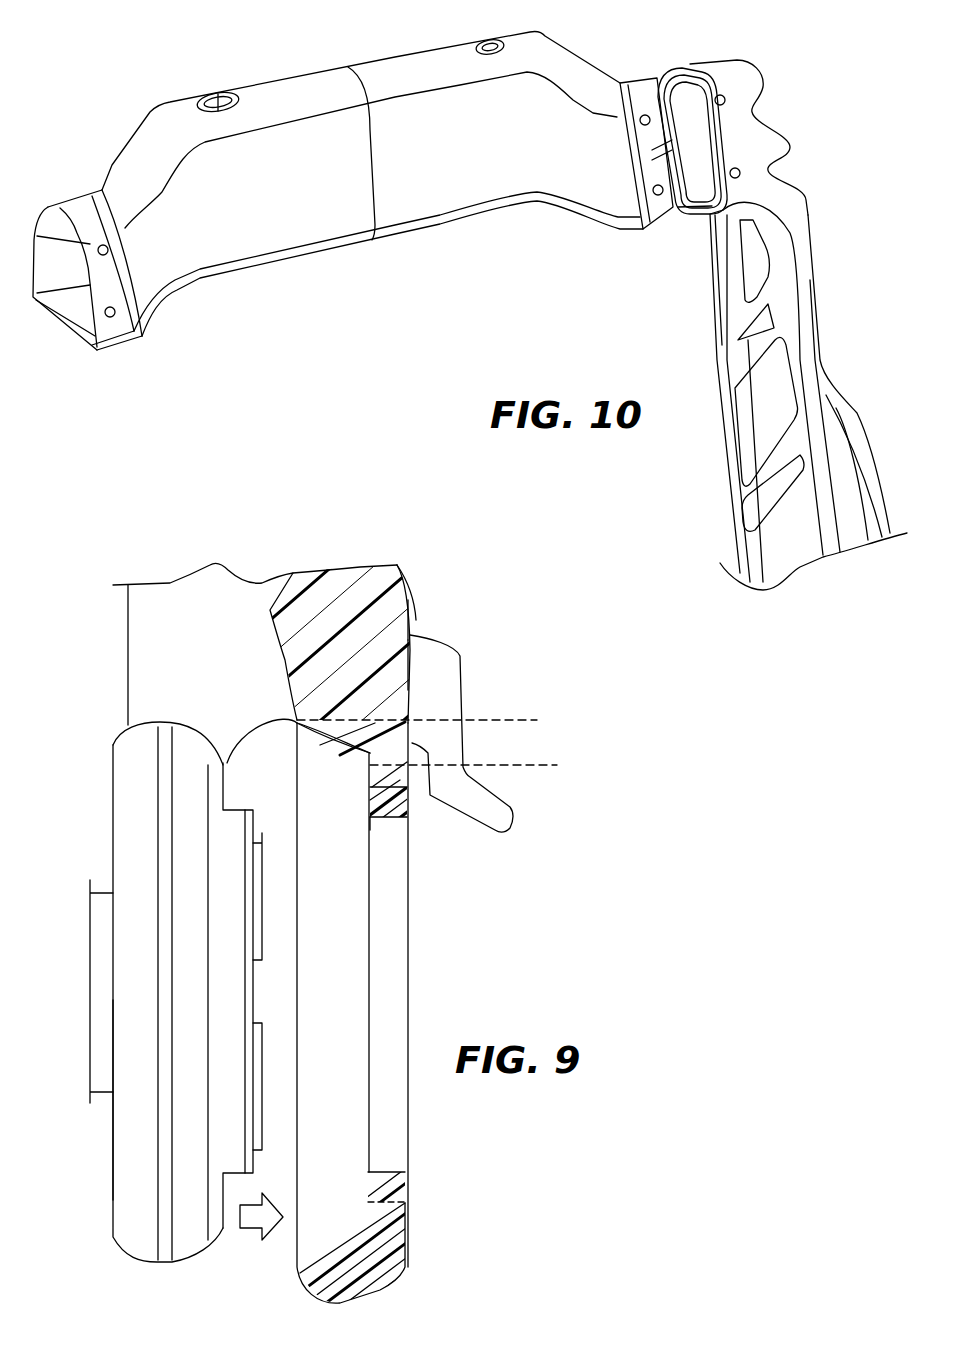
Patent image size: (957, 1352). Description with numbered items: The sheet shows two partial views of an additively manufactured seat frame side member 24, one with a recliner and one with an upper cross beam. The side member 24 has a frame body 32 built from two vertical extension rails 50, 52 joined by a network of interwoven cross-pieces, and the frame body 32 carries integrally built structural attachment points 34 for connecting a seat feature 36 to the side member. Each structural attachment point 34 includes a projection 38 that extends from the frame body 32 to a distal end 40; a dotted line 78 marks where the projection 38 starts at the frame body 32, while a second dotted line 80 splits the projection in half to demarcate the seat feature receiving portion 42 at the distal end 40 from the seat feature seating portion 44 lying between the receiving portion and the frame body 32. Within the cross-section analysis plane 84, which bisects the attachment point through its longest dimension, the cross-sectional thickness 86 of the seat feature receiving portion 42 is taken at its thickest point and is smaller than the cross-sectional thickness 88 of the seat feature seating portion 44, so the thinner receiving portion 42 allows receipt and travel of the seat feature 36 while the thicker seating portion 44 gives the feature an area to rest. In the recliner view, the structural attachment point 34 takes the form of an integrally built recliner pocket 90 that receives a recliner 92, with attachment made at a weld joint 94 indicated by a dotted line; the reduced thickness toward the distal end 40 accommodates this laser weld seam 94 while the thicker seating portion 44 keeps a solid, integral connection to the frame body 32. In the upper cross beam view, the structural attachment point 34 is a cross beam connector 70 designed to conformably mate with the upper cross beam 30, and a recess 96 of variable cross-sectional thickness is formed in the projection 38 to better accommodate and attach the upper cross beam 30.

In FIG. 10, the seat frame side member 24 is at (797, 232).
In FIG. 9, the seat frame side member 24 is at (360, 568).
In FIG. 10, the upper cross beam 30 is at (538, 48).
In FIG. 10, the frame body 32 is at (808, 292).
In FIG. 9, the frame body 32 is at (410, 600).
In FIG. 10, the structural attachment point 34 is at (662, 70).
In FIG. 9, the structural attachment point 34 is at (410, 812).
In FIG. 9, the seat feature 36 is at (113, 772).
In FIG. 10, the projection 38 is at (685, 66).
In FIG. 9, the distal end 40 is at (392, 820).
In FIG. 9, the seat feature receiving portion 42 is at (378, 795).
In FIG. 9, the seat feature seating portion 44 is at (365, 742).
In FIG. 10, the vertical extension rail 50 is at (722, 287).
In FIG. 9, the vertical extension rail 50 is at (385, 637).
In FIG. 10, the vertical extension rail 52 is at (813, 340).
In FIG. 10, the cross beam connector 70 is at (722, 62).
In FIG. 9, the dotted line indicating start of projection 78 is at (510, 718).
In FIG. 9, the dotted line demarcating boundary 80 is at (552, 765).
In FIG. 9, the cross-section analysis plane 84 is at (333, 562).
In FIG. 9, the cross-sectional thickness of seat feature receiving portion 86 is at (378, 812).
In FIG. 9, the cross-sectional thickness of seat feature seating portion 88 is at (380, 720).
In FIG. 9, the recliner pocket 90 is at (400, 752).
In FIG. 9, the recliner 92 is at (128, 855).
In FIG. 9, the weld joint 94 is at (410, 790).
In FIG. 10, the recess 96 is at (697, 207).